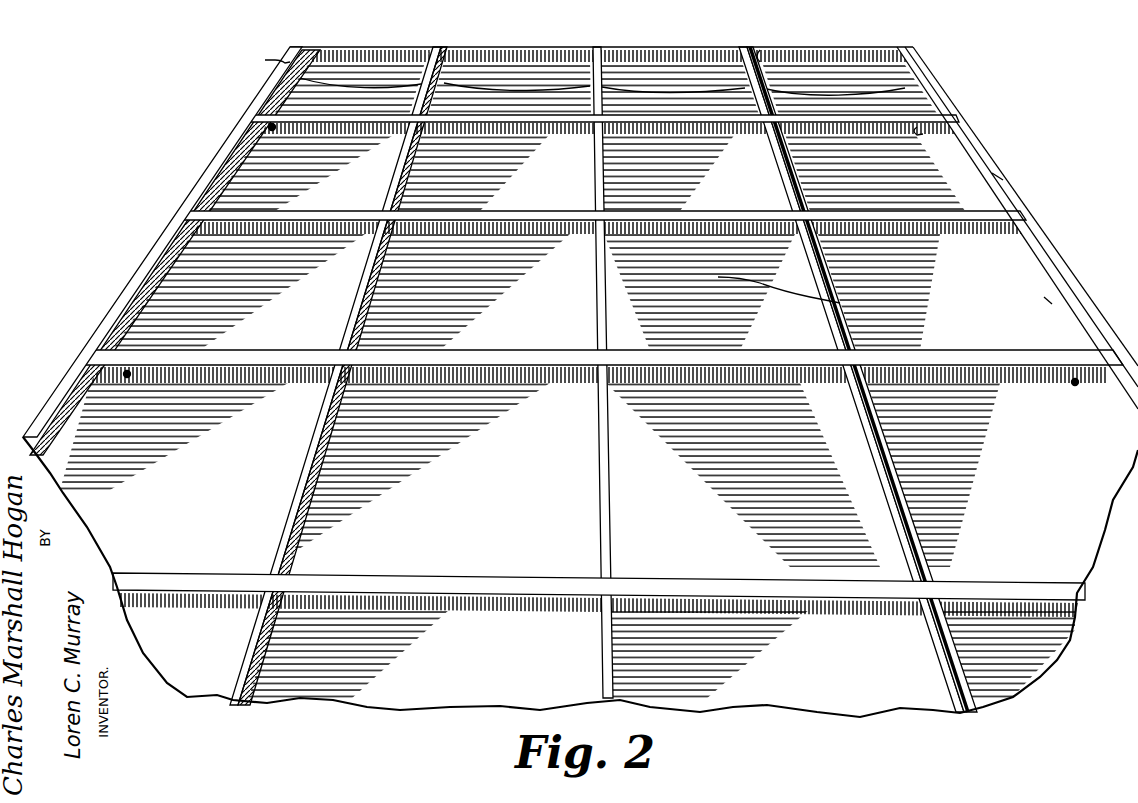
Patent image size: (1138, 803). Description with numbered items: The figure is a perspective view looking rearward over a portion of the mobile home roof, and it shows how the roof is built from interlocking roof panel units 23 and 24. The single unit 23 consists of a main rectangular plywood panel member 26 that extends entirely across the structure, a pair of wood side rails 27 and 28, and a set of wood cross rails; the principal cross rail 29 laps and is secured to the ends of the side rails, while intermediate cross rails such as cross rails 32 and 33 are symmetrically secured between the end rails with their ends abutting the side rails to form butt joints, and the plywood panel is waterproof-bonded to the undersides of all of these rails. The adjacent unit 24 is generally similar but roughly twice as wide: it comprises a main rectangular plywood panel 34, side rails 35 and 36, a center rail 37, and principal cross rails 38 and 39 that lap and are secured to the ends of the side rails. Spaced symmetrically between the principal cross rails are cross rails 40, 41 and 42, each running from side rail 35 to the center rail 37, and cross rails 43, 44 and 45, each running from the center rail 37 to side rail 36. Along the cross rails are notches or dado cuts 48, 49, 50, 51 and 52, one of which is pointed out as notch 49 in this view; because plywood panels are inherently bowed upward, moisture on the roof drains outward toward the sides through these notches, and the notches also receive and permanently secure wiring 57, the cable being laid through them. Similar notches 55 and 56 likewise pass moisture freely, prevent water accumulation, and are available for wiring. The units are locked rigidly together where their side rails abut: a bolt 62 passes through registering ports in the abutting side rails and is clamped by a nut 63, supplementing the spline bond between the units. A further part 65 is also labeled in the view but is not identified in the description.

The roof panel unit 23 is at (954, 103).
The roof panel unit 24 is at (1047, 241).
The main rectangular plywood panel member 26 is at (552, 106).
The wood side rail 27 is at (736, 54).
The wood side rail 28 is at (821, 114).
The wood cross rail 29 is at (923, 71).
The wood cross rail 32 is at (522, 78).
The wood cross rail 33 is at (755, 62).
The main rectangular plywood panel 34 is at (539, 291).
The side rail 35 is at (538, 128).
The side rail 36 is at (528, 350).
The center rail 37 is at (724, 225).
The principal cross rail 38 is at (992, 176).
The principal cross rail 39 is at (201, 178).
The cross rail 40 is at (397, 192).
The cross rail 41 is at (490, 172).
The cross rail 42 is at (791, 196).
The cross rail 43 is at (378, 262).
The cross rail 44 is at (600, 313).
The cross rail 45 is at (838, 317).
The notch 48 is at (1045, 295).
The notch 49 is at (772, 61).
The notch 50 is at (267, 51).
The notch 51 is at (462, 60).
The notch 52 is at (150, 295).
The notch 55 is at (855, 56).
The notch 56 is at (340, 57).
The wiring 57 is at (840, 94).
The bolt 62 is at (917, 128).
The nut 63 is at (130, 371).
The fastener 65 is at (256, 129).